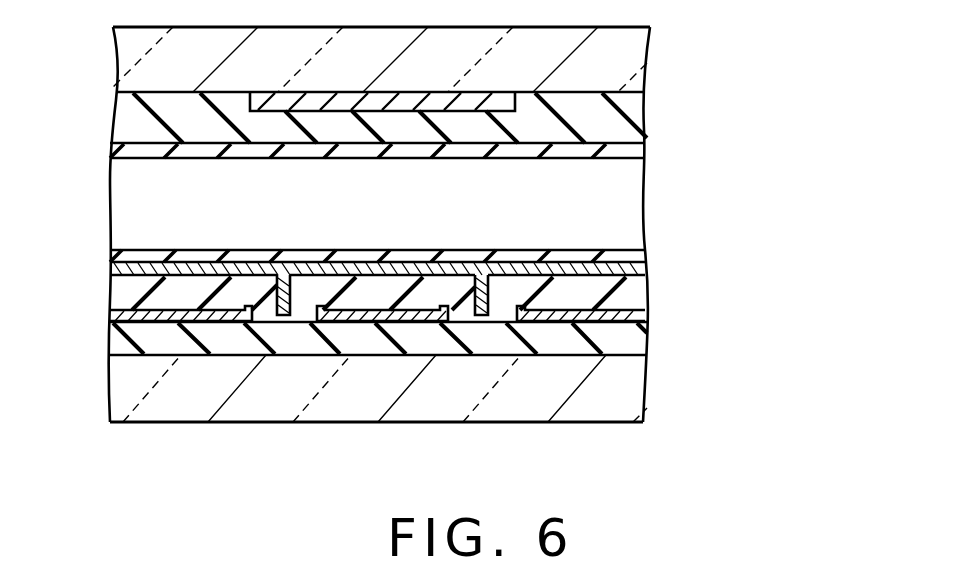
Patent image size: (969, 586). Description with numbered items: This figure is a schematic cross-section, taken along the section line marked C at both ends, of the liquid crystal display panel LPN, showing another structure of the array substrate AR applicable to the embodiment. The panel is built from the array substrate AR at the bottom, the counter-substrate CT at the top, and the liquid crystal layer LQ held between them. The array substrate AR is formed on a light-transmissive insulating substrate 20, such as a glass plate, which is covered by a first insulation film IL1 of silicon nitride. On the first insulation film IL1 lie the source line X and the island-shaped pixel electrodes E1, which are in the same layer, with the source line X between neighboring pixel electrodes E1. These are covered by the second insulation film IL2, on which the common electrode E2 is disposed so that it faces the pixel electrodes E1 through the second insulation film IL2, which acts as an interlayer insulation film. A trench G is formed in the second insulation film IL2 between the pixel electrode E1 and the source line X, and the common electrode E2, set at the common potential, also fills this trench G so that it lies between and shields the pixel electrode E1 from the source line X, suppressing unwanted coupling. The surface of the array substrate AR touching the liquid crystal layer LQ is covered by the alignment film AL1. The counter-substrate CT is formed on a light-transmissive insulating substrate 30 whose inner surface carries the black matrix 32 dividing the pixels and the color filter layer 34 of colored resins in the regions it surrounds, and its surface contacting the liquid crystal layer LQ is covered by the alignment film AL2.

The insulating substrate 30 is at (640, 52).
The black matrix 32 is at (545, 103).
The color filter layer 34 is at (637, 125).
The alignment film AL2 is at (648, 158).
The liquid crystal layer LQ is at (637, 204).
The alignment film AL1 is at (645, 257).
The common electrode E2 is at (645, 268).
The second insulation film IL2 is at (645, 290).
The pixel electrode E1 is at (645, 315).
The first insulation film IL1 is at (640, 338).
The insulating substrate 20 is at (640, 400).
The trench G is at (481, 316).
The source line X is at (374, 326).
The section line C- C is at (376, 443).
The counter-substrate CT is at (92, 27).
The array substrate AR is at (90, 247).
The liquid crystal display panel LPN is at (758, 162).